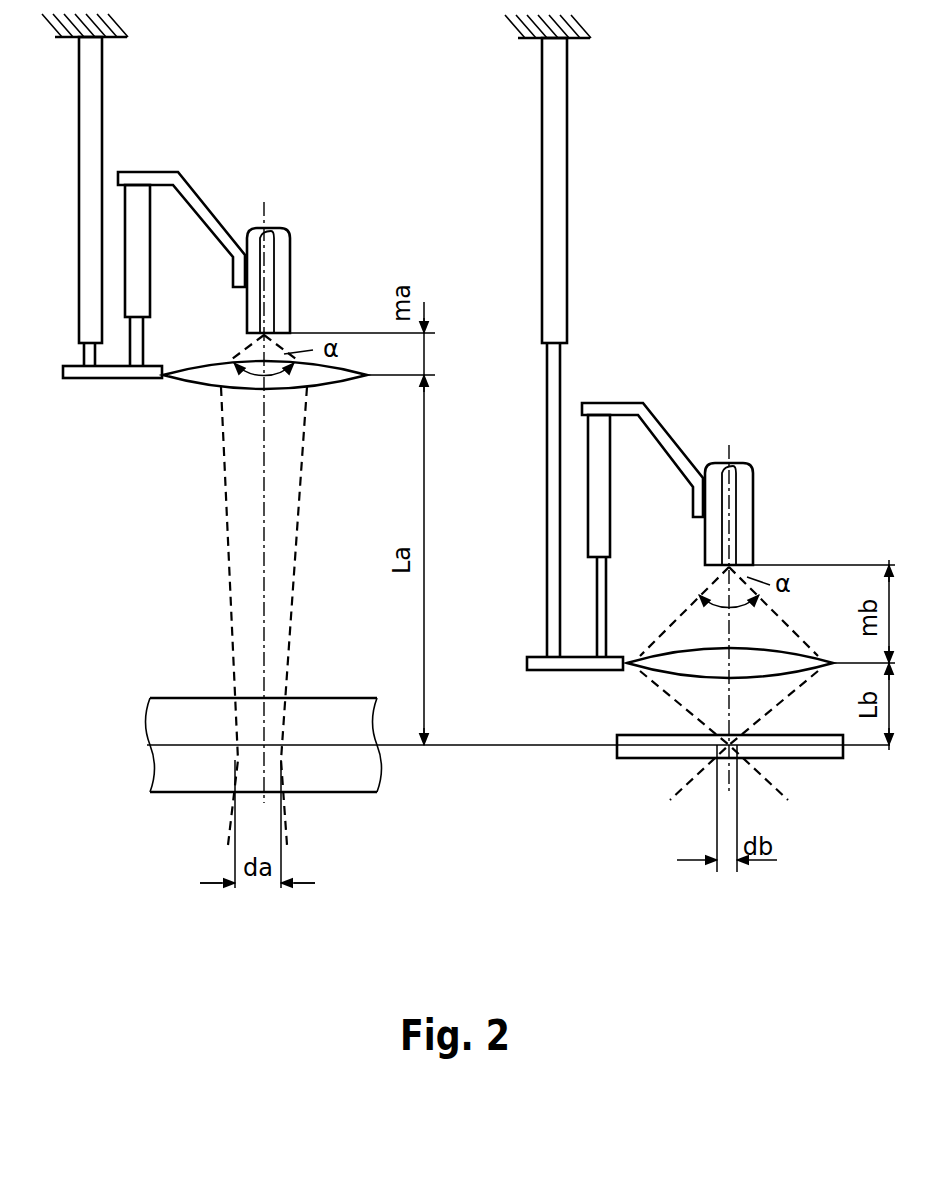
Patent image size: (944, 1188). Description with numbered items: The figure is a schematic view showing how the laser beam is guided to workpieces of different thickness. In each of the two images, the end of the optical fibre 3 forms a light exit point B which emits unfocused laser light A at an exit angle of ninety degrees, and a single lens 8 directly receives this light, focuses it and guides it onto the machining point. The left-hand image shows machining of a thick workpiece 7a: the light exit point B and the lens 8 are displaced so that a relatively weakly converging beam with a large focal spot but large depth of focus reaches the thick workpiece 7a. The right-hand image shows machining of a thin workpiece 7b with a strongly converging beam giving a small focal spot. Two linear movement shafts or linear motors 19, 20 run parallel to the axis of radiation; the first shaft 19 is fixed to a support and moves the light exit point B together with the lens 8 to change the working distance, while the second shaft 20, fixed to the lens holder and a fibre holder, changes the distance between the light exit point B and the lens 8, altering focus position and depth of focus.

The first shaft/linear motor 19 is at (87, 203).
The second shaft/linear motor 20 is at (140, 260).
The optical fibre 3 is at (282, 275).
The lens 8 is at (330, 380).
The laser light A is at (228, 440).
The light exit point B is at (277, 335).
The thick workpiece 7a is at (153, 767).
The thin workpiece 7b is at (633, 750).